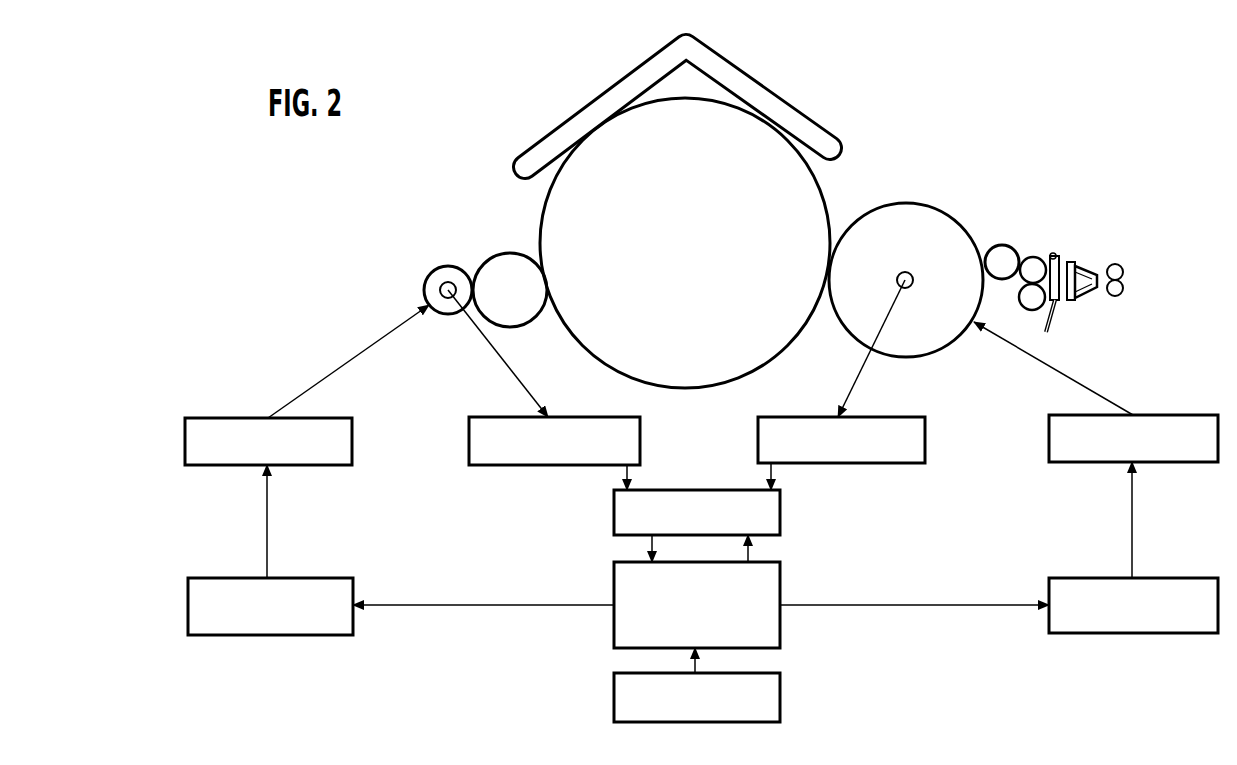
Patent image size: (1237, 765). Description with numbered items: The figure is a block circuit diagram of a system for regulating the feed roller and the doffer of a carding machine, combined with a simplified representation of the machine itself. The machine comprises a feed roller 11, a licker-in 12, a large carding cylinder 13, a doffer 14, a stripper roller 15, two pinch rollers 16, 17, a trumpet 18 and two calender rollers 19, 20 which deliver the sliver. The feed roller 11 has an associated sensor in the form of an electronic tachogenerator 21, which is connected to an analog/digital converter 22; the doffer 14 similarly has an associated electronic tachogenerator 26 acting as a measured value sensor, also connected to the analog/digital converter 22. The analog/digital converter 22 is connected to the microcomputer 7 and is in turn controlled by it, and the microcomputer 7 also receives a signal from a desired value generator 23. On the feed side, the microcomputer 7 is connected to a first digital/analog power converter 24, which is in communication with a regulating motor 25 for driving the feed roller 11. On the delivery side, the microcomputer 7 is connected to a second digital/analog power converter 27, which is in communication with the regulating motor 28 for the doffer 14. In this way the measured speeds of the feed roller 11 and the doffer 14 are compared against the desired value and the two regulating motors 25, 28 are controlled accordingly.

The microcomputer 7 is at (775, 578).
The feed roller 11 is at (436, 276).
The licker-in 12 is at (505, 262).
The carding cylinder 13 is at (823, 200).
The doffer 14 is at (921, 205).
The stripper roller 15 is at (1002, 246).
The pinch roller 16 is at (1033, 258).
The pinch roller 17 is at (1031, 311).
The trumpet 18 is at (1078, 264).
The calender roller 19 is at (1122, 268).
The calender roller 20 is at (1120, 294).
The electronic tachogenerator 21 is at (596, 425).
The analog/digital converter 22 is at (775, 510).
The desired value generator 23 is at (775, 688).
The first digital/analog power converter 24 is at (348, 582).
The regulating motor 25 is at (333, 422).
The electronic tachogenerator 26 is at (905, 422).
The second digital/analog power converter 27 is at (1205, 585).
The regulating motor 28 is at (1186, 422).